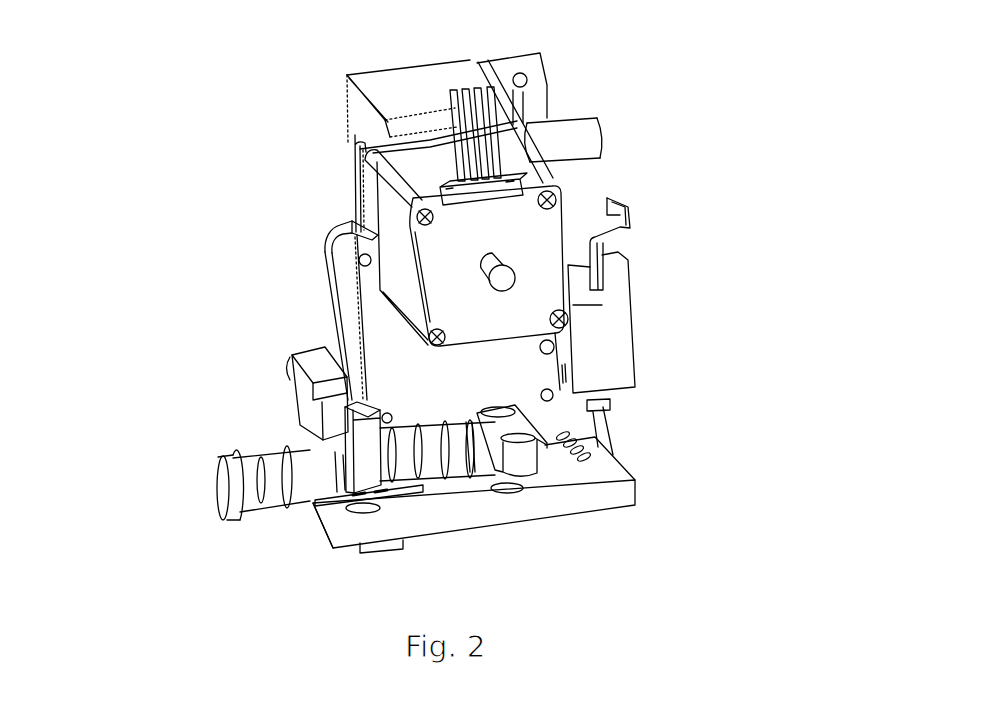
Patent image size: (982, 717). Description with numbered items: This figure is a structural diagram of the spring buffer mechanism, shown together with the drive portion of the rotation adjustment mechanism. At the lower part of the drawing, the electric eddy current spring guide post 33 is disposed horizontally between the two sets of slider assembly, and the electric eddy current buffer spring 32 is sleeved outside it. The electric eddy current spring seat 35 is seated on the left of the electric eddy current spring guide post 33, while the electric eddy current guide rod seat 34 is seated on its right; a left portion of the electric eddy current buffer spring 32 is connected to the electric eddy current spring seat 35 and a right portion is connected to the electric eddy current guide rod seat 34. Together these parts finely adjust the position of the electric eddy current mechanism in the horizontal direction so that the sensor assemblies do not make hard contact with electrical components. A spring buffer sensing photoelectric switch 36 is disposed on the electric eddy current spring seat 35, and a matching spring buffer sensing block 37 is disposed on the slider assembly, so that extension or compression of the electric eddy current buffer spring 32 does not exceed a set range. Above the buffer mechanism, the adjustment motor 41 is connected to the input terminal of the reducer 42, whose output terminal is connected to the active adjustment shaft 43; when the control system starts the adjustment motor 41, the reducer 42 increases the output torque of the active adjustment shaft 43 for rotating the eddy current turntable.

The electric eddy current buffer spring 32 is at (265, 462).
The electric eddy current spring guide post 33 is at (275, 482).
The electric eddy current guide rod seat 34 is at (510, 426).
The electric eddy current spring seat 35 is at (384, 421).
The spring buffer sensing photoelectric switch 36 is at (295, 350).
The spring buffer sensing block 37 is at (360, 457).
The adjustment motor 41 is at (527, 220).
The reducer 42 is at (427, 83).
The active adjustment shaft 43 is at (575, 133).